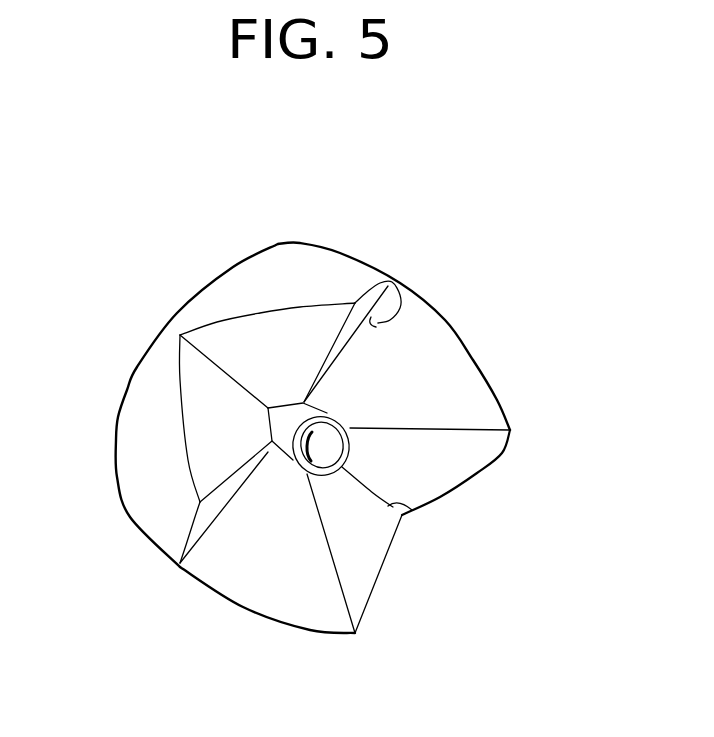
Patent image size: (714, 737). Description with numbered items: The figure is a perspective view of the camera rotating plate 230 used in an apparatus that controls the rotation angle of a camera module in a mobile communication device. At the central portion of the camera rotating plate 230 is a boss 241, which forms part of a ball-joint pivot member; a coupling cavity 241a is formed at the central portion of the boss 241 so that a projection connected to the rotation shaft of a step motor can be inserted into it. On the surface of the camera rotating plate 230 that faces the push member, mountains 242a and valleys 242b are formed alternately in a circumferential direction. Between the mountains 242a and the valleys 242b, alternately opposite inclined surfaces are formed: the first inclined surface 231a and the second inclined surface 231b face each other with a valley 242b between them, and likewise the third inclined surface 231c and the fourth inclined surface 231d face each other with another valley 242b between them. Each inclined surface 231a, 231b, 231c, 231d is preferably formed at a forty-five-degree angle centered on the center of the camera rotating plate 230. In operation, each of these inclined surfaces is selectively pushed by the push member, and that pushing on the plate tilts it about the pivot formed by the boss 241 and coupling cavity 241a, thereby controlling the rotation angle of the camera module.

The camera rotating plate 230 is at (273, 242).
The first inclined surface 231a is at (372, 282).
The second inclined surface 231b is at (450, 392).
The third inclined surface 231c is at (358, 580).
The fourth inclined surface 231d is at (450, 447).
The boss 241 is at (288, 432).
The coupling cavity 241a is at (325, 443).
The mountains 242a is at (339, 331).
The valleys 242b is at (402, 296).